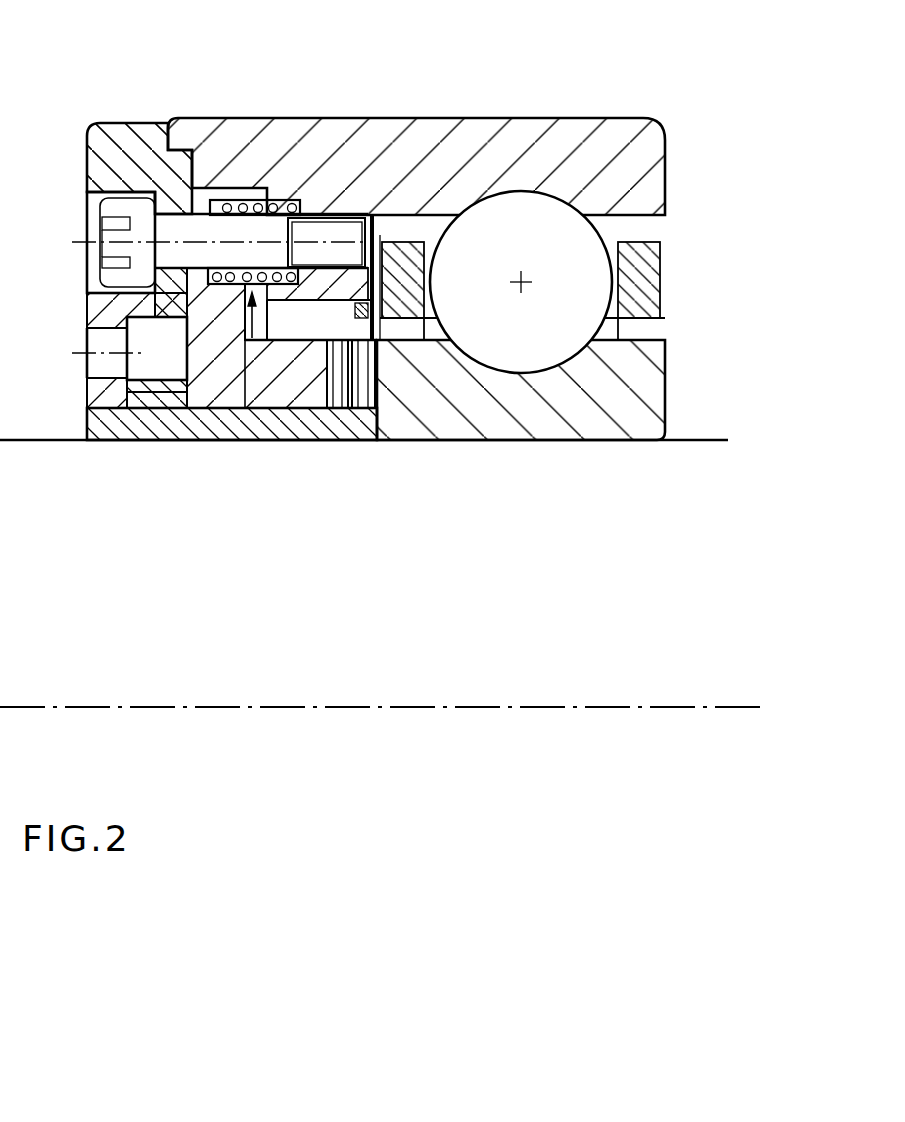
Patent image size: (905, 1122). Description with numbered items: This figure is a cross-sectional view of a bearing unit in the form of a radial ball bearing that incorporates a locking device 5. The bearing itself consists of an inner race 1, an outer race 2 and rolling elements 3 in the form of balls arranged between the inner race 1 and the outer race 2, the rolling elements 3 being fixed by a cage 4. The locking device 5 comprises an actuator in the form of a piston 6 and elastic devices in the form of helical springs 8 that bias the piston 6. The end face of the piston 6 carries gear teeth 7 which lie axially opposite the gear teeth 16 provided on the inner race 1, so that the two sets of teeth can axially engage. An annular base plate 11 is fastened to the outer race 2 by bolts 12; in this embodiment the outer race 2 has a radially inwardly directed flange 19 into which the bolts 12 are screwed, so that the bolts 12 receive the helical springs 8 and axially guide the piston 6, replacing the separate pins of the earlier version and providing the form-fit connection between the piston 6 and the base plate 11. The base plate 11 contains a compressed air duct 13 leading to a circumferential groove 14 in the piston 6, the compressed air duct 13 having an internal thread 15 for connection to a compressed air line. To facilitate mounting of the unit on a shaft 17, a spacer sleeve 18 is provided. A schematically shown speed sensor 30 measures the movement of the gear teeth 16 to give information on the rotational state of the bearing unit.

The inner race 1 is at (600, 375).
The outer race 2 is at (643, 175).
The rolling elements 3 is at (565, 247).
The cage 4 is at (643, 275).
The locking device 5 is at (244, 390).
The piston 6 is at (294, 388).
The gear teeth 7 is at (337, 390).
The helical springs 8 is at (252, 212).
The base plate 11 is at (120, 142).
The bolts 12 is at (195, 232).
The compressed air duct 13 is at (102, 367).
The circumferential groove 14 is at (156, 365).
The internal thread 15 is at (87, 410).
The gear teeth 16 is at (366, 395).
The shaft 17 is at (648, 487).
The spacer sleeve 18 is at (203, 433).
The radially inwardly directed flange 19 is at (323, 284).
The speed sensor 30 is at (356, 306).